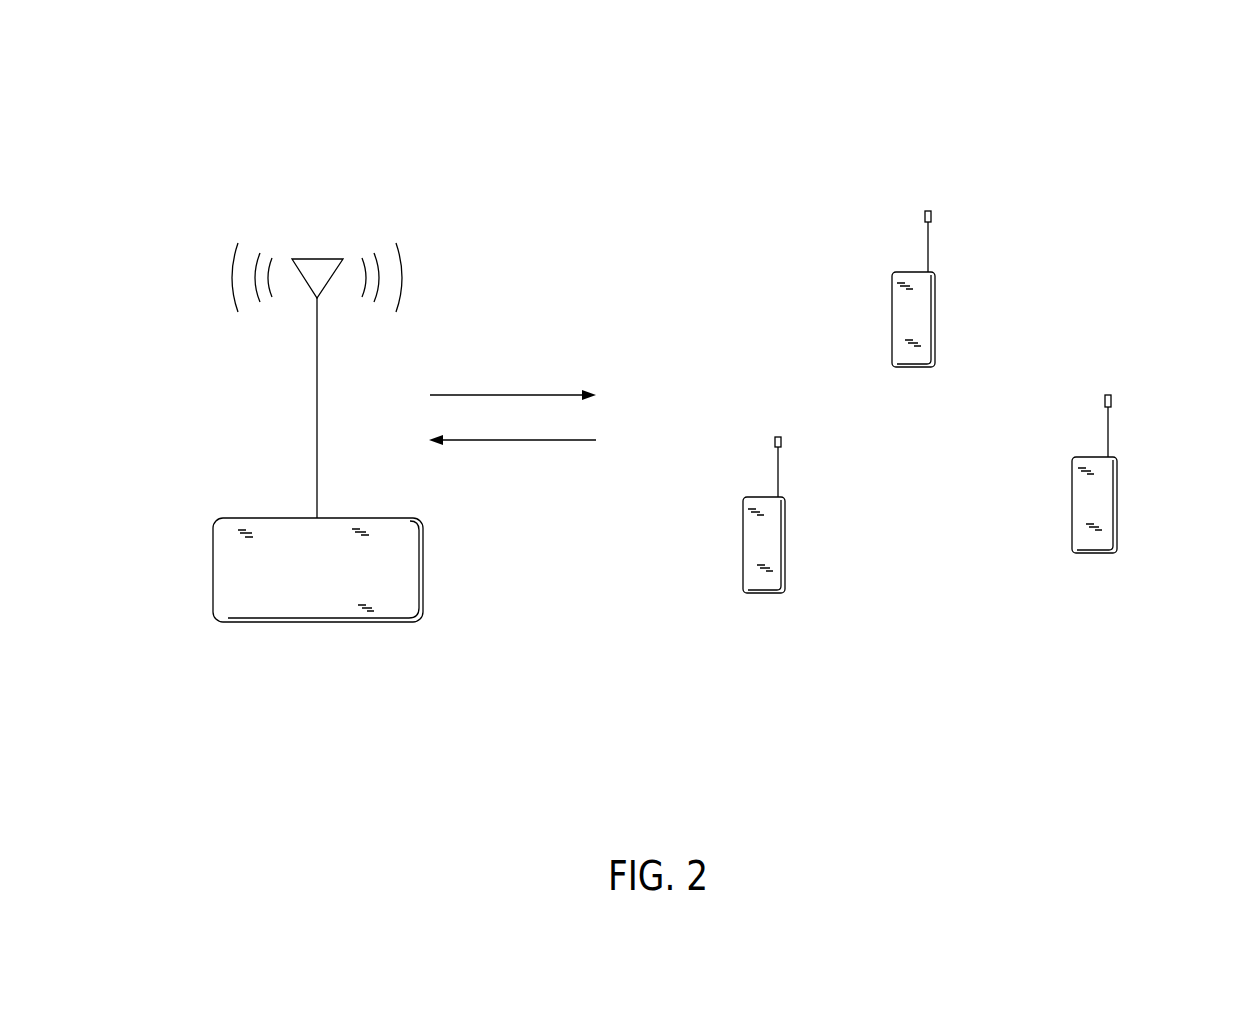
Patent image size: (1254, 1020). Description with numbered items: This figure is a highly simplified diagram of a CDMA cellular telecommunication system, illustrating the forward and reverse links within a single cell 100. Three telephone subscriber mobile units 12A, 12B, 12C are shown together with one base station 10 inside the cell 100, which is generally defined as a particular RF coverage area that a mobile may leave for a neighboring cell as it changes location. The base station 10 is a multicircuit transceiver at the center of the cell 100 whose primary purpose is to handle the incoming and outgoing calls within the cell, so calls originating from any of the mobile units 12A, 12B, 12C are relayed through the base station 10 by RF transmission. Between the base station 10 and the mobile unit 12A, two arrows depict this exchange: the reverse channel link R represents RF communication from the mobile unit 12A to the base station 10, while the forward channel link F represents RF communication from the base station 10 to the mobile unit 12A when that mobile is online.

The cell 100 is at (1026, 108).
The base station 10 is at (213, 558).
The telephone subscriber mobile unit 12A is at (785, 540).
The telephone subscriber mobile unit 12B is at (935, 333).
The telephone subscriber mobile unit 12C is at (1117, 490).
The forward channel link F is at (450, 395).
The reverse channel link R is at (565, 440).